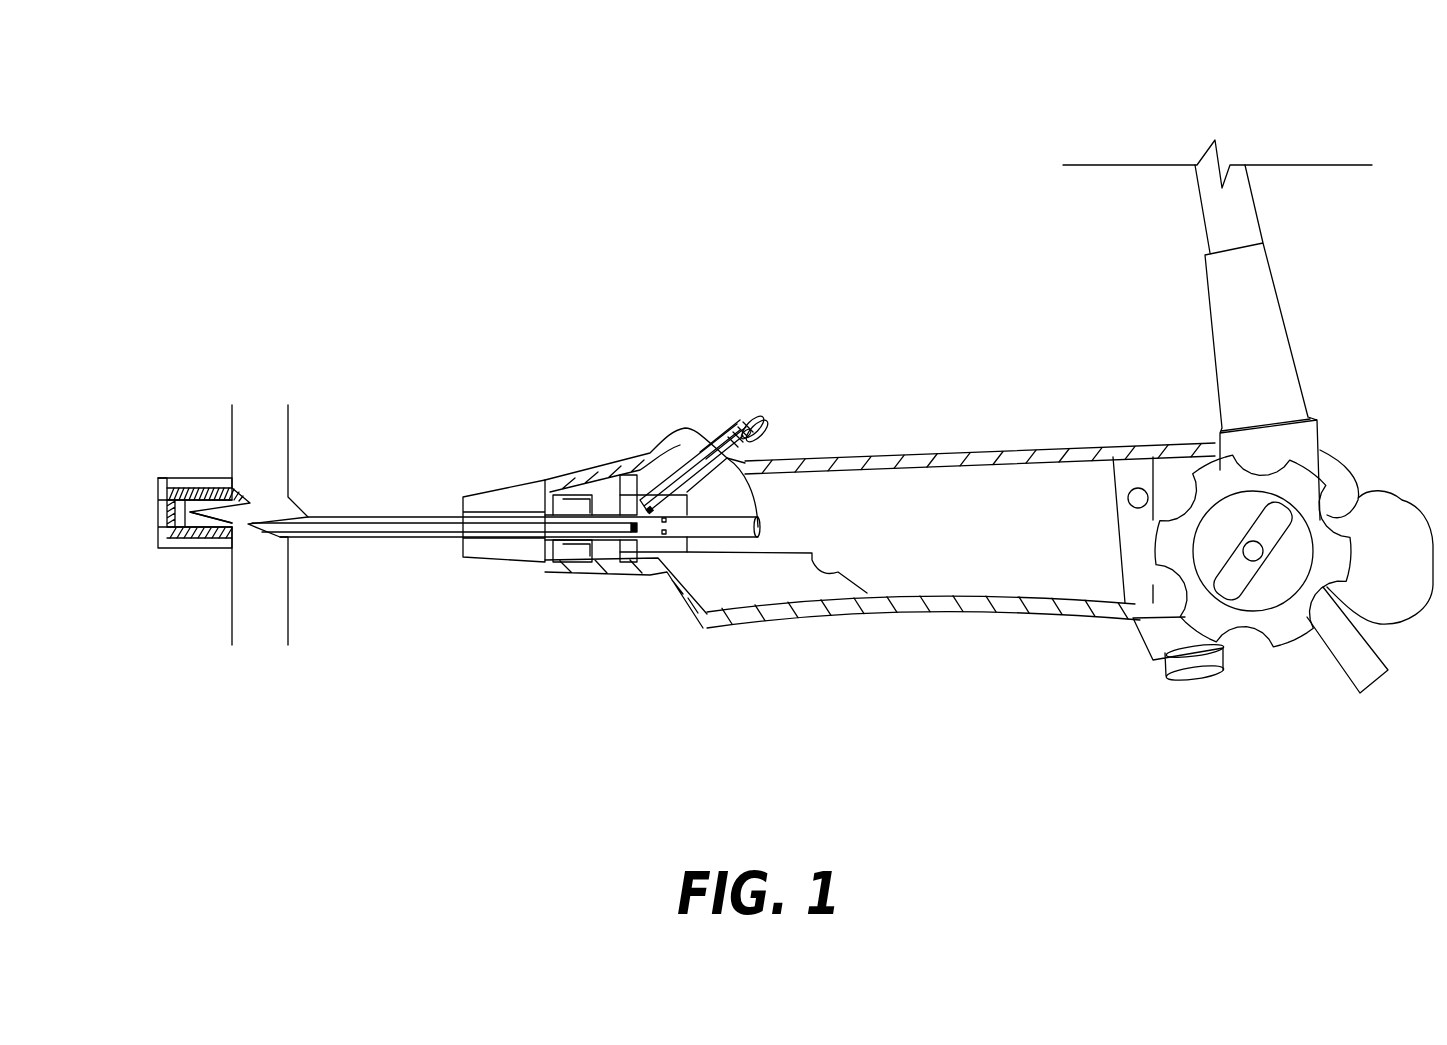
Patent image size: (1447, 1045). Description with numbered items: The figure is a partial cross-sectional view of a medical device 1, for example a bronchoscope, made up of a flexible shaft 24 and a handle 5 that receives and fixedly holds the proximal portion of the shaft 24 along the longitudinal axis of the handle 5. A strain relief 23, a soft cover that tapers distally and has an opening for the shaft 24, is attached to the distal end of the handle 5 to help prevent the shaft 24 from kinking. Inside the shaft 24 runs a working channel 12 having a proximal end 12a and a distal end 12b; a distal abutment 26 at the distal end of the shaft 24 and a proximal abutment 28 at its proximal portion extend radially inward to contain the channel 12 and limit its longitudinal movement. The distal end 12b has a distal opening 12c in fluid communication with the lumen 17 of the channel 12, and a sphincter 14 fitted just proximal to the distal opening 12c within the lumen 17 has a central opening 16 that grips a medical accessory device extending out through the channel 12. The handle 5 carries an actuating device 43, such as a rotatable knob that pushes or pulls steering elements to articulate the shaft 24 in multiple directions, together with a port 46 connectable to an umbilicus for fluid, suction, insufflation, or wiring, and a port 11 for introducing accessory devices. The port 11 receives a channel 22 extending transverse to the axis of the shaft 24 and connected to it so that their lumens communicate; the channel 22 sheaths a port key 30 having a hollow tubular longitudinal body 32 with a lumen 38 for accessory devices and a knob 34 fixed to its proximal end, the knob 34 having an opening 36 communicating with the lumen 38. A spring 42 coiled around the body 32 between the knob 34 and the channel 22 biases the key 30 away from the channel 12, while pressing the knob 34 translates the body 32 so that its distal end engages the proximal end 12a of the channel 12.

The medical device 1 is at (1422, 176).
The handle 5 is at (925, 652).
The port 11 is at (718, 445).
The working channel 12 is at (578, 537).
The proximal end 12a is at (615, 537).
The distal end 12b is at (190, 520).
The distal opening 12c is at (165, 515).
The sphincter 14 is at (165, 504).
The central opening 16 is at (163, 519).
The lumen 17 is at (208, 524).
The channel 22 is at (642, 470).
The strain relief 23 is at (510, 490).
The flexible shaft 24 is at (187, 478).
The distal abutment 26 is at (160, 490).
The proximal abutment 28 is at (664, 536).
The port key 30 is at (813, 353).
The longitudinal body 32 is at (748, 458).
The knob 34 is at (765, 420).
The opening 36 is at (745, 415).
The lumen 38 is at (610, 480).
The spring 42 is at (752, 443).
The actuating device 43 is at (1343, 568).
The port 46 is at (1275, 363).